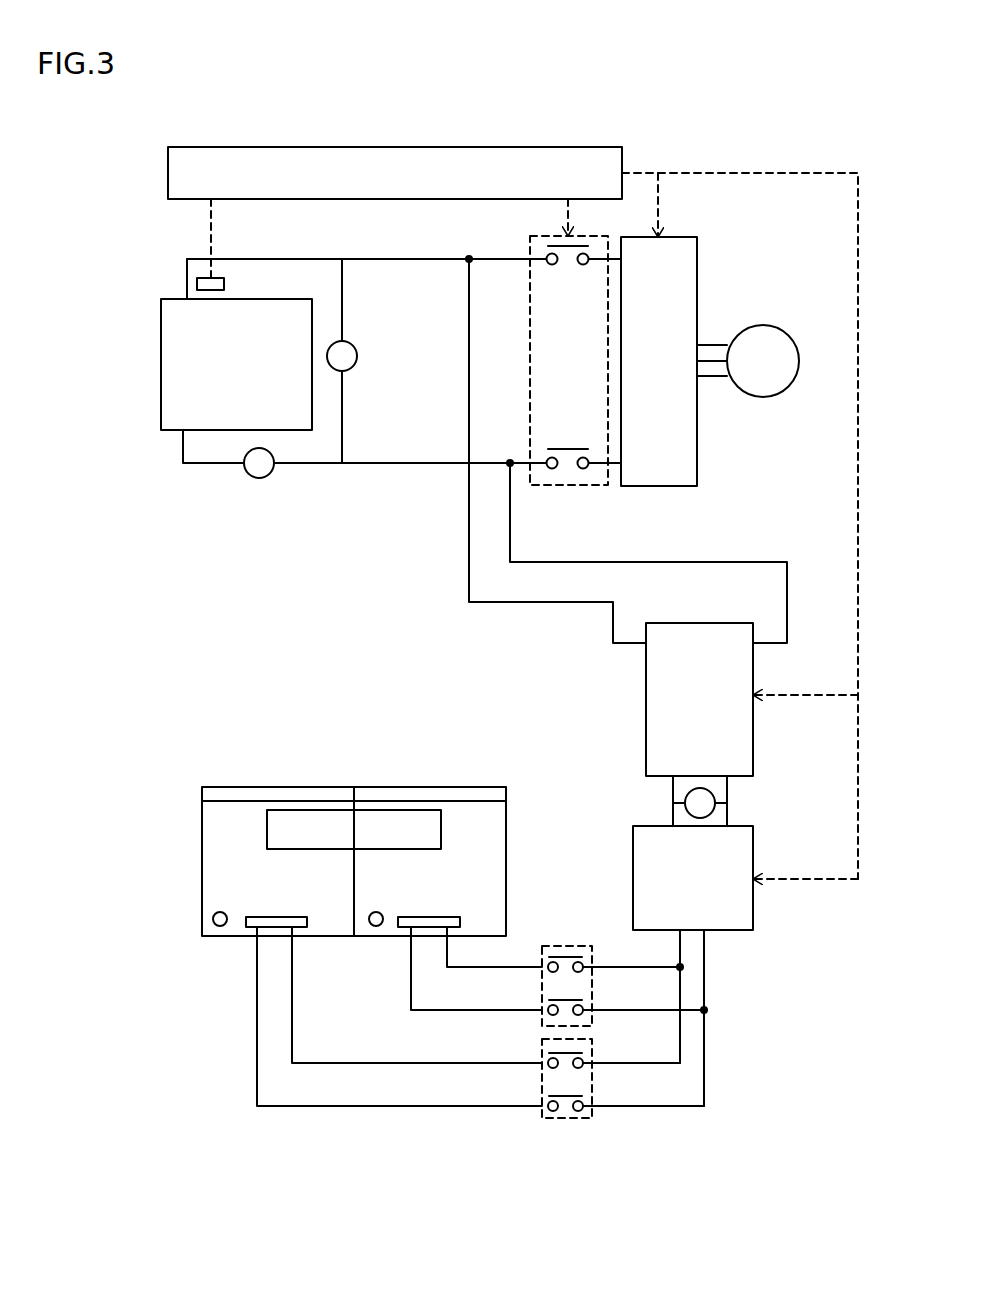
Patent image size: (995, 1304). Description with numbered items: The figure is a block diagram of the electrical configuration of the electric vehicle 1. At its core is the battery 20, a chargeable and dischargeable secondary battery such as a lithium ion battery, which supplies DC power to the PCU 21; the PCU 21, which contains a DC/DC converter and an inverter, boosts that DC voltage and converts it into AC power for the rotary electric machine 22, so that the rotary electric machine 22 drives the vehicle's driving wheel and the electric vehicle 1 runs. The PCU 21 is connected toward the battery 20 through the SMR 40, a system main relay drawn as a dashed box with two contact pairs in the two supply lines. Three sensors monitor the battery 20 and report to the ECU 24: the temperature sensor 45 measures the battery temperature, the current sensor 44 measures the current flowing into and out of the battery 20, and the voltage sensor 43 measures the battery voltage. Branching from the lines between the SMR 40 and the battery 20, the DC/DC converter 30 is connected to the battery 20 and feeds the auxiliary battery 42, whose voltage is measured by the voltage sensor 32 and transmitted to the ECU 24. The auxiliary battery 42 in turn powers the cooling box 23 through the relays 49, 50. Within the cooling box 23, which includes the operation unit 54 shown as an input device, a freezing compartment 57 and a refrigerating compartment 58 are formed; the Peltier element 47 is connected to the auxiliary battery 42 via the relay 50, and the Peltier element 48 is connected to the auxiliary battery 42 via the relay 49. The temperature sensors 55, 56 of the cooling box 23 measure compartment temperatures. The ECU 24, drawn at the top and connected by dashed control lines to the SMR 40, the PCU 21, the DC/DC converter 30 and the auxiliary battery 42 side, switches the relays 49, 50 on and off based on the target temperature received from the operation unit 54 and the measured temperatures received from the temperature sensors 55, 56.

The electric vehicle 1 is at (655, 148).
The battery 20 is at (161, 368).
The PCU 21 is at (698, 283).
The rotary electric machine 22 is at (800, 361).
The cooling box 23 is at (328, 787).
The ECU 24 is at (359, 147).
The DC/DC converter 30 is at (645, 694).
The voltage sensor 32 is at (716, 795).
The SMR 40 is at (570, 488).
The auxiliary battery 42 is at (632, 860).
The voltage sensor 43 is at (358, 355).
The current sensor 44 is at (258, 480).
The temperature sensor 45 is at (197, 285).
The Peltier element 47 is at (275, 916).
The Peltier element 48 is at (428, 916).
The relay 49 is at (595, 954).
The relay 50 is at (595, 1050).
The operation unit 54 is at (410, 810).
The temperature sensor 55 is at (219, 928).
The temperature sensor 56 is at (376, 928).
The freezing compartment 57 is at (215, 836).
The refrigerating compartment 58 is at (473, 835).